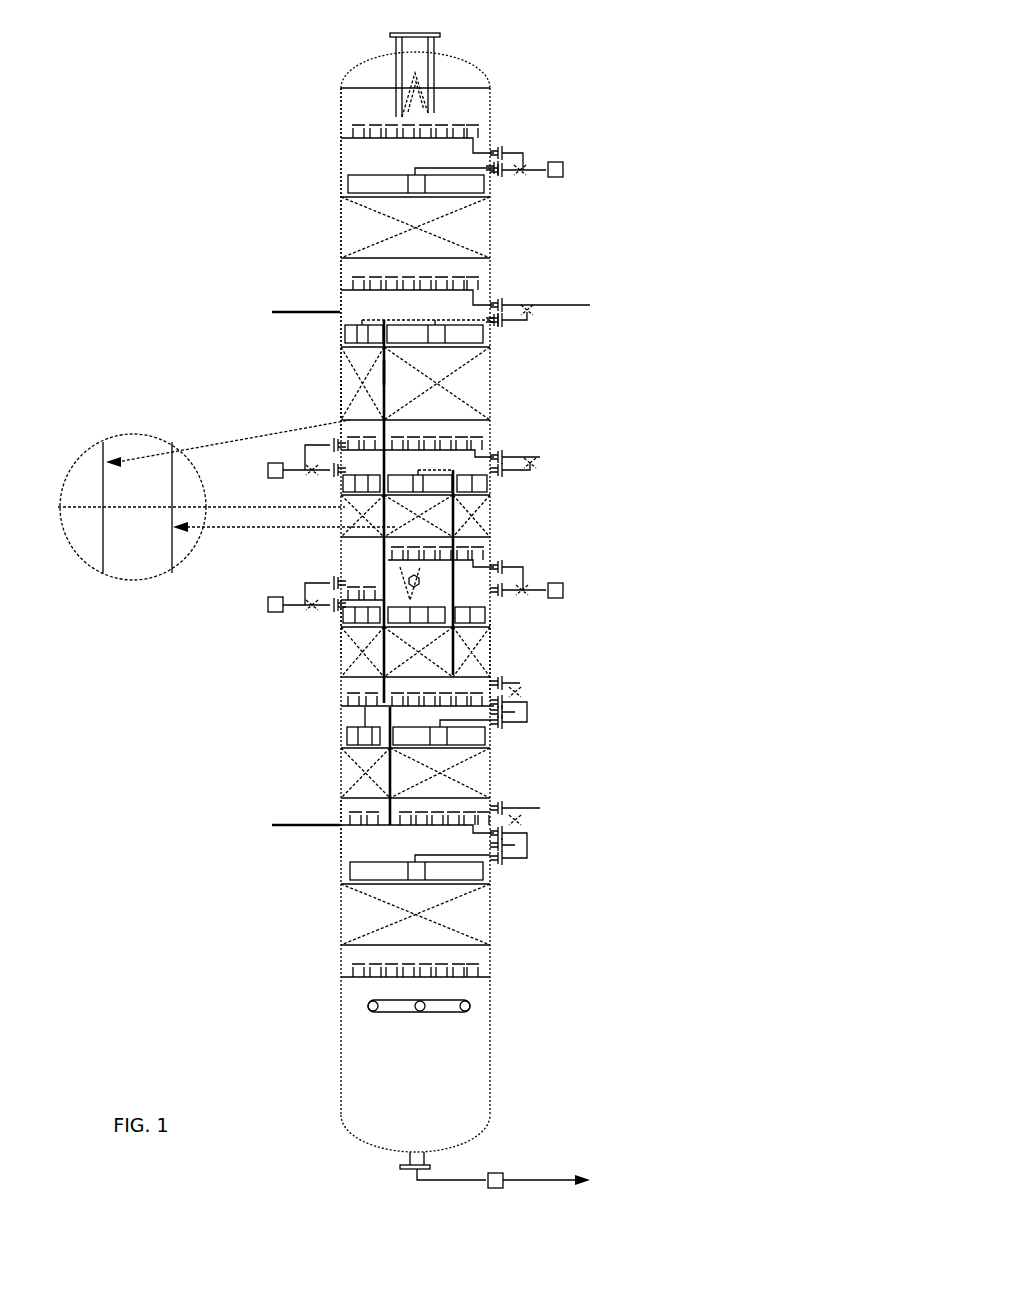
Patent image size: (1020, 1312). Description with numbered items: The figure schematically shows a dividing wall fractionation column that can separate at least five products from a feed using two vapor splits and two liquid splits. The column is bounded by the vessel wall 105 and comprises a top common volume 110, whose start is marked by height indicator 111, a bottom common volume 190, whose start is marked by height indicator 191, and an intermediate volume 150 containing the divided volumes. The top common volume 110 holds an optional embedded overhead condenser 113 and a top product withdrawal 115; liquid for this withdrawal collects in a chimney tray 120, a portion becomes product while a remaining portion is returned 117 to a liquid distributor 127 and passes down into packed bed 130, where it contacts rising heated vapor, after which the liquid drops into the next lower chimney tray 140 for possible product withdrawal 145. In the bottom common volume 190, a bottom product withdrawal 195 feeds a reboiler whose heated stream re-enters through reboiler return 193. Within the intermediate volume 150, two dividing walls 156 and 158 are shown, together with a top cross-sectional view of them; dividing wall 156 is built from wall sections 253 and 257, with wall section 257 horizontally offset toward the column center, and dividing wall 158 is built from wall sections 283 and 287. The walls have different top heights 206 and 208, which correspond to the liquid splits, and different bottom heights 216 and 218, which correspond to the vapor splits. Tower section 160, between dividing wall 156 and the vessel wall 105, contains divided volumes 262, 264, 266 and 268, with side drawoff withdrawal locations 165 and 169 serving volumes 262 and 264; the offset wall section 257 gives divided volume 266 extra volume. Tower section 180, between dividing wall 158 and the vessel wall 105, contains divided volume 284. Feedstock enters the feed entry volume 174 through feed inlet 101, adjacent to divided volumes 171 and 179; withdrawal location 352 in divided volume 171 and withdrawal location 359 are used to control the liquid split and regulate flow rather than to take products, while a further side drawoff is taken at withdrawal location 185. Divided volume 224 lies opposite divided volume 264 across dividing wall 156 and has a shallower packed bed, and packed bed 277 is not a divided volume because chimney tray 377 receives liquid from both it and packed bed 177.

The feed inlet 101 is at (445, 592).
The vessel wall 105 is at (330, 237).
The top common volume 110 is at (312, 180).
The height indicator 111 is at (263, 305).
The embedded overhead condenser 113 is at (445, 78).
The top product withdrawal 115 is at (578, 163).
The returned liquid portion 117 is at (510, 162).
The chimney tray 120 is at (485, 125).
The liquid distributor 127 is at (500, 185).
The packed bed 130 is at (498, 227).
The chimney tray 140 is at (477, 290).
The product withdrawal 145 is at (559, 310).
The intermediate volume 150 is at (263, 410).
The dividing wall 156 is at (400, 372).
The dividing wall 158 is at (470, 518).
The tower section 160 is at (325, 640).
The withdrawal location 165 is at (253, 467).
The withdrawal location 169 is at (272, 618).
The divided volume 171 is at (477, 400).
The feed entry volume 174 is at (385, 563).
The packed bed 177 is at (420, 663).
The divided volume 179 is at (478, 770).
The tower section 180 is at (475, 655).
The withdrawal location 185 is at (575, 590).
The bottom common volume 190 is at (310, 921).
The height indicator 191 is at (262, 825).
The reboiler return 193 is at (445, 1017).
The bottom product withdrawal 195 is at (520, 1171).
The top height 206 is at (378, 316).
The top height 208 is at (507, 470).
The bottom height 216 is at (385, 830).
The bottom height 218 is at (480, 653).
The divided volume 224 is at (420, 535).
The wall section 253 is at (350, 392).
The wall section 257 is at (383, 720).
The divided volume 262 is at (347, 389).
The divided volume 264 is at (355, 498).
The divided volume 266 is at (345, 664).
The divided volume 268 is at (345, 772).
The packed bed 277 is at (478, 660).
The wall section 283 is at (463, 498).
The divided volume 284 is at (490, 507).
The wall section 287 is at (455, 653).
The withdrawal location 352 is at (553, 461).
The withdrawal location 359 is at (540, 808).
The chimney tray 377 is at (440, 707).